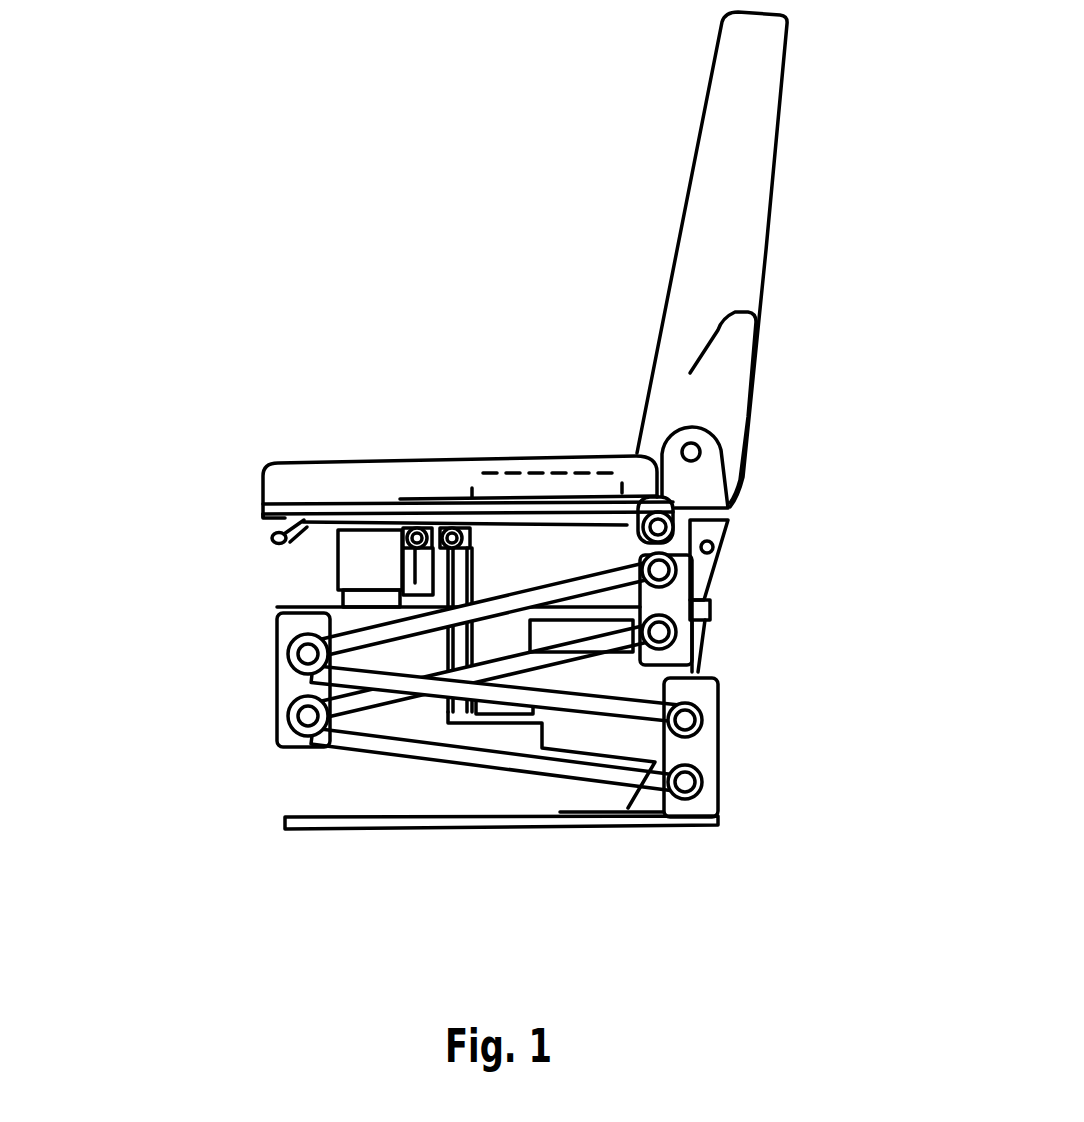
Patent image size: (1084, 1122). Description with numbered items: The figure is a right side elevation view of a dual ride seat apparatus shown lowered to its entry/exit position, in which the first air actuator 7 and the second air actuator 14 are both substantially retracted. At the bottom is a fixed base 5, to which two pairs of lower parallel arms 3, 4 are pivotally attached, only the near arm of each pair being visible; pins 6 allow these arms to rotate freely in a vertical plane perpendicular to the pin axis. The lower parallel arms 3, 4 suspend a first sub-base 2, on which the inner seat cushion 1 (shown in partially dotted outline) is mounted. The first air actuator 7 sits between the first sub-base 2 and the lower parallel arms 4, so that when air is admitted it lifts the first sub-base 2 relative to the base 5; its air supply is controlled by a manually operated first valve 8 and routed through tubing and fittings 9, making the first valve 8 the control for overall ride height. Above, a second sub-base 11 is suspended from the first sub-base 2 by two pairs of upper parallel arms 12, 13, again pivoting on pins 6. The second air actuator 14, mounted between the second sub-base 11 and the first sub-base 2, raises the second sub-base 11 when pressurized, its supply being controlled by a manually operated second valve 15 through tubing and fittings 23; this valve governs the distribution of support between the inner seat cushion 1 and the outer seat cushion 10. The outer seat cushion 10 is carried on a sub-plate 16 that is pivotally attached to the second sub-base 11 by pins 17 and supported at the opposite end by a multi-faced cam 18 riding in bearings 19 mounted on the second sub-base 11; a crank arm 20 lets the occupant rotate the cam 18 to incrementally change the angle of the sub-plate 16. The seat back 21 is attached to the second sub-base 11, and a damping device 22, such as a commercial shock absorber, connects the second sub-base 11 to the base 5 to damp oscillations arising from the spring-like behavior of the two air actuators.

The inner seat cushion 1 is at (548, 458).
The first sub-base 2 is at (275, 632).
The lower parallel arms 3 is at (598, 722).
The lower parallel arms 4 is at (523, 770).
The fixed base 5 is at (278, 821).
The pins 6 is at (700, 788).
The first air actuator 7 is at (540, 628).
The first valve 8 is at (473, 352).
The tubing and fittings 9 is at (445, 716).
The outer seat cushion 10 is at (345, 458).
The second sub-base 11 is at (705, 612).
The upper parallel arms 12 is at (405, 708).
The upper parallel arms 13 is at (600, 565).
The second air actuator 14 is at (336, 583).
The second valve 15 is at (415, 526).
The sub-plate 16 is at (333, 502).
The pins 17 is at (808, 362).
The multi-faced cam 18 is at (300, 525).
The bearings 19 is at (303, 517).
The crank arm 20 is at (272, 540).
The seat back 21 is at (776, 172).
The damping device 22 is at (716, 567).
The tubing and fittings 23 is at (514, 470).